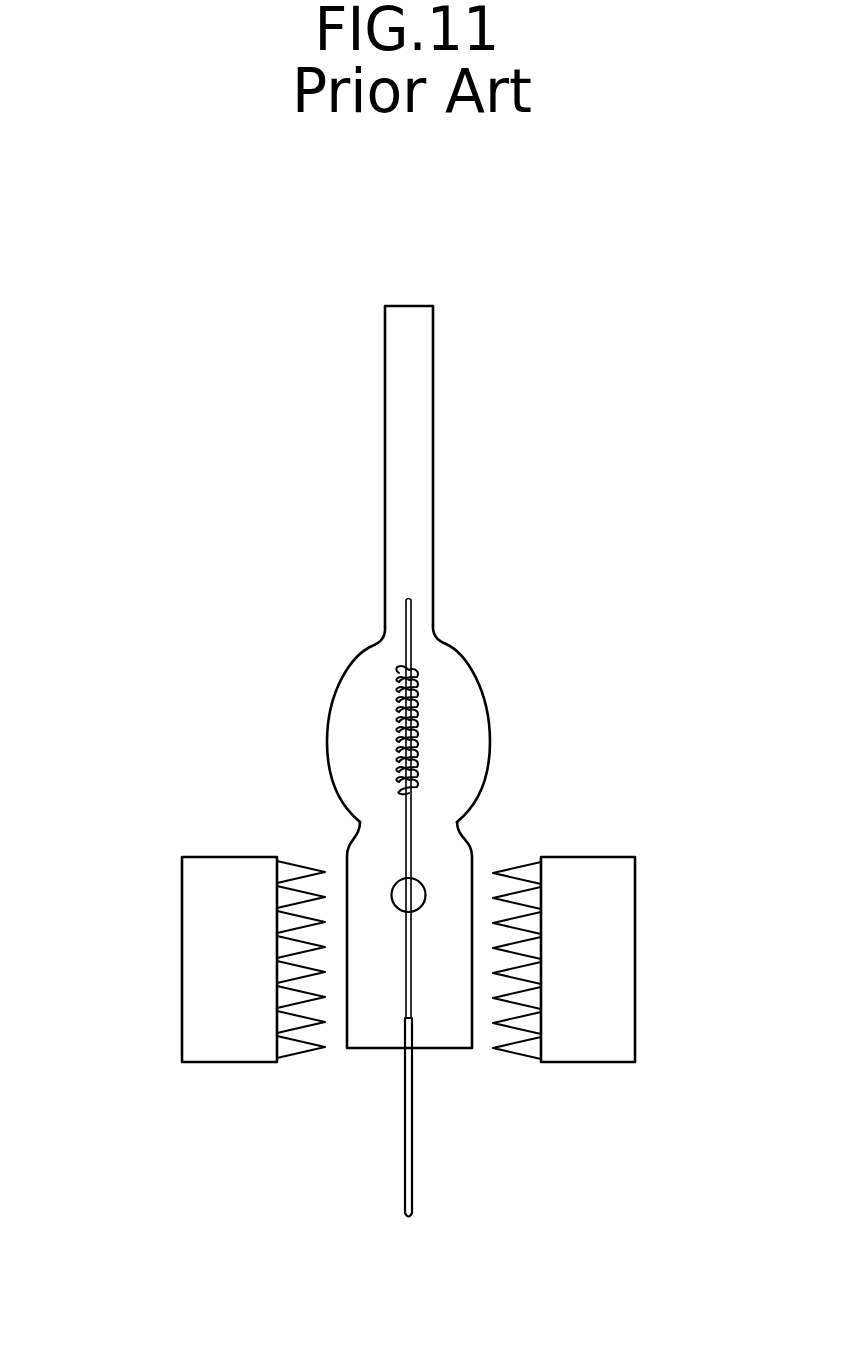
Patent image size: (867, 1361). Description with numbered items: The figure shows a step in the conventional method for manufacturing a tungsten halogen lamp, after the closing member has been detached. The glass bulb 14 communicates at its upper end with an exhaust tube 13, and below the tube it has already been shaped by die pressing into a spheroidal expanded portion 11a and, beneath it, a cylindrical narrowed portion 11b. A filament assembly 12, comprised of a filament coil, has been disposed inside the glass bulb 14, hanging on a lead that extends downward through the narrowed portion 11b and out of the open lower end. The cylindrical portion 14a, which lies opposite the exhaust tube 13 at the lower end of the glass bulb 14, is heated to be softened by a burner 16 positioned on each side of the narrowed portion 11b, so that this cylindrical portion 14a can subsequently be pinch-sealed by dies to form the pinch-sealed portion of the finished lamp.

The expanded portion 11a is at (468, 730).
The narrowed portion 11b is at (442, 827).
The filament assembly 12 is at (400, 693).
The exhaust tube 13 is at (415, 508).
The glass bulb 14 is at (486, 795).
The cylindrical portion 14a is at (368, 892).
The burner 16 is at (202, 943).